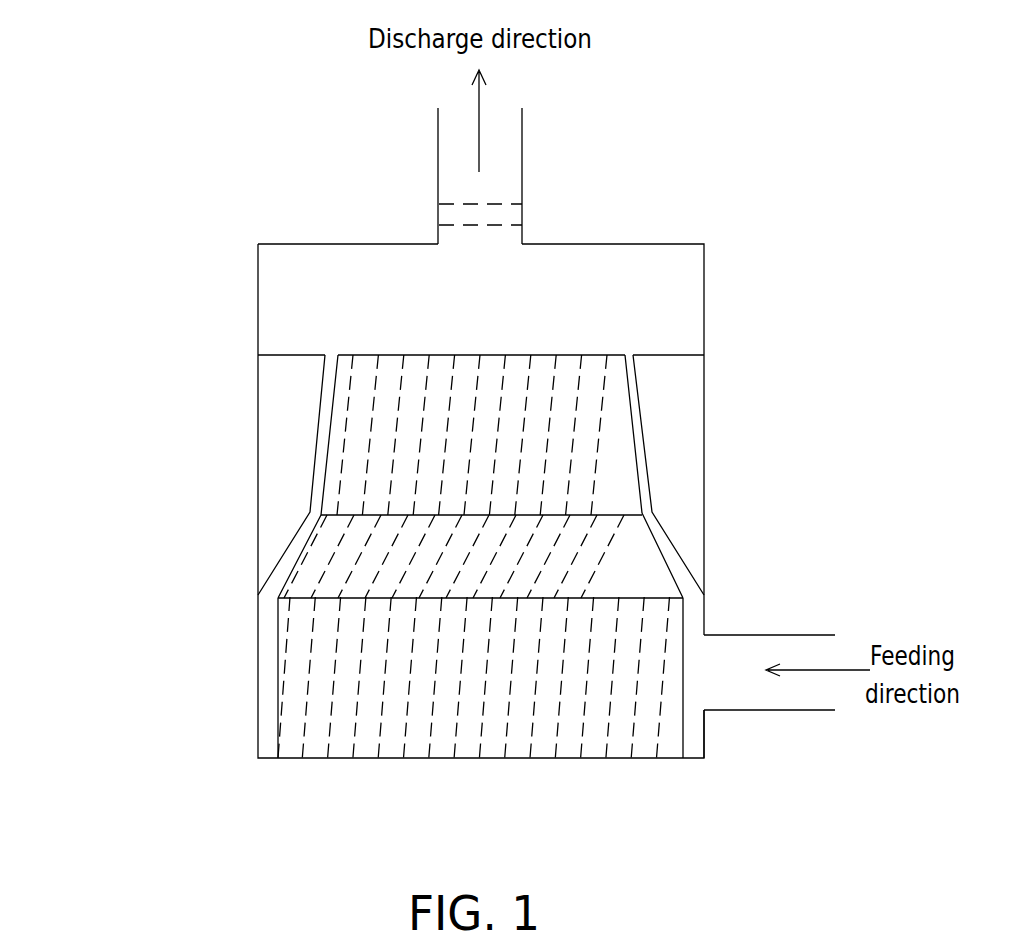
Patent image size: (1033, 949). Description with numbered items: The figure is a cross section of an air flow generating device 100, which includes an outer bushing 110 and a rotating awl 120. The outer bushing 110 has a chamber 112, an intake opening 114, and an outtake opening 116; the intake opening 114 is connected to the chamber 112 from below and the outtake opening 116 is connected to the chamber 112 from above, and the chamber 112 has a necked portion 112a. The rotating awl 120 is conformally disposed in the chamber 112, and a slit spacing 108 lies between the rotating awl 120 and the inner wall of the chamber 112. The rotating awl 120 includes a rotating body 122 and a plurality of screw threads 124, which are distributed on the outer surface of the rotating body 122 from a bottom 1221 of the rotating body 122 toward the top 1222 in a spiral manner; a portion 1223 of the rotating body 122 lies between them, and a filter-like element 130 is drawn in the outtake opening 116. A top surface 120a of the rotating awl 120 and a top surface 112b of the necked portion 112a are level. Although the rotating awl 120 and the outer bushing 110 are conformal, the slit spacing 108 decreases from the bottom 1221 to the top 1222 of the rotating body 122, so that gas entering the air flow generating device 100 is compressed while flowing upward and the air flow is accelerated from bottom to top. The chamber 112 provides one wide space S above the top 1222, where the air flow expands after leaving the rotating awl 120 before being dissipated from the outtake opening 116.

The air flow generating device 100 is at (726, 99).
The slit spacing 108 is at (338, 342).
The outer bushing 110 is at (720, 623).
The chamber 112 is at (695, 740).
The necked portion 112a is at (684, 539).
The top surface of the necked portion 112b is at (674, 342).
The intake opening 114 is at (826, 656).
The outtake opening 116 is at (509, 122).
The rotating awl 120 is at (103, 422).
The top surface of the rotating awl 120a is at (574, 338).
The rotating body 122 is at (166, 462).
The bottom of the rotating body 1221 is at (325, 668).
The top of the rotating body 1222 is at (348, 468).
The inclined portion 1223 is at (345, 566).
The screw threads 124 is at (368, 418).
The filter 130 is at (526, 212).
The wide space S is at (403, 289).